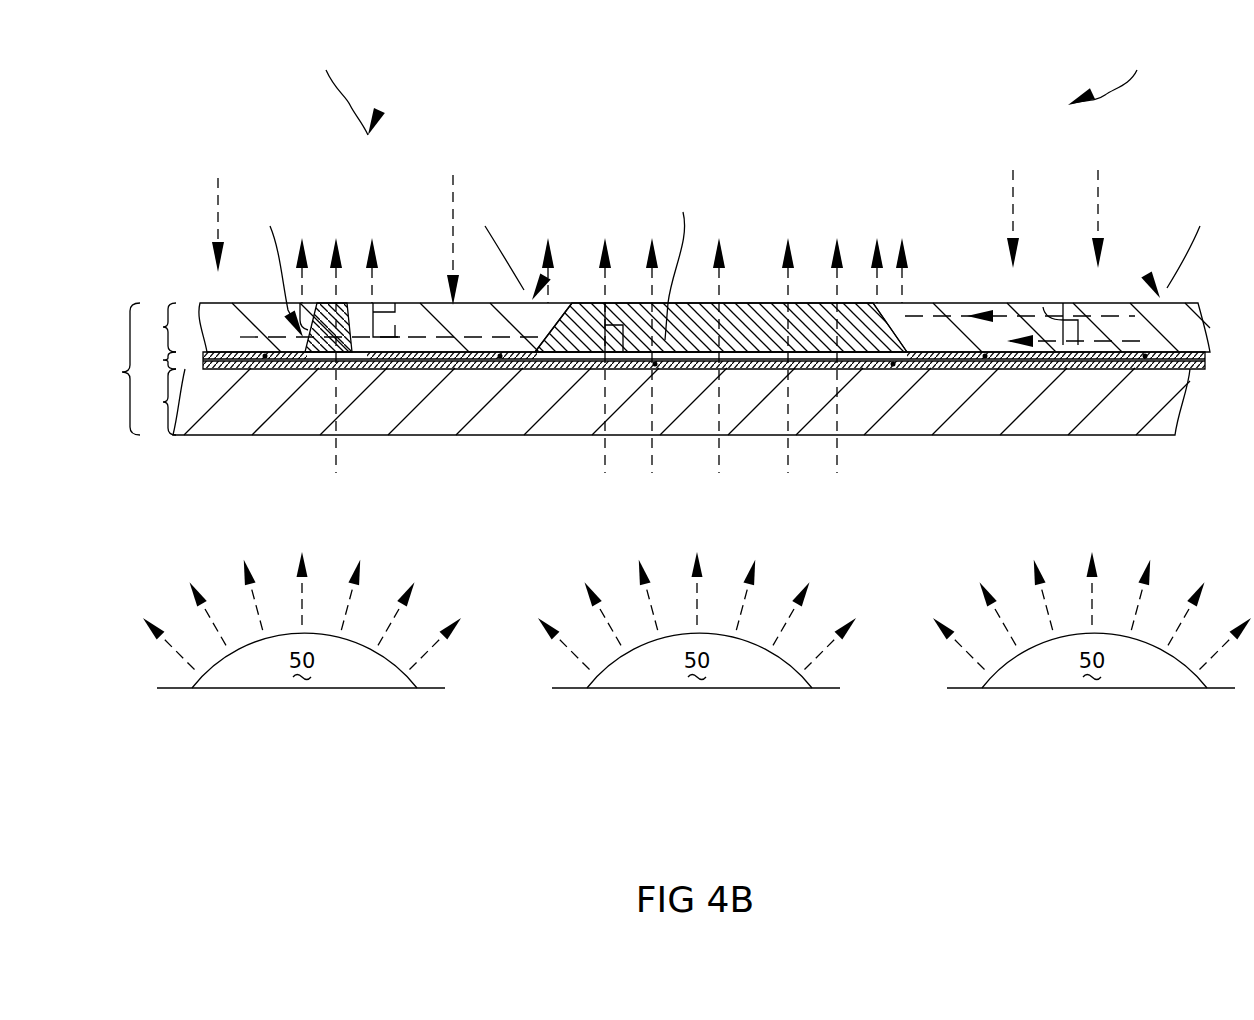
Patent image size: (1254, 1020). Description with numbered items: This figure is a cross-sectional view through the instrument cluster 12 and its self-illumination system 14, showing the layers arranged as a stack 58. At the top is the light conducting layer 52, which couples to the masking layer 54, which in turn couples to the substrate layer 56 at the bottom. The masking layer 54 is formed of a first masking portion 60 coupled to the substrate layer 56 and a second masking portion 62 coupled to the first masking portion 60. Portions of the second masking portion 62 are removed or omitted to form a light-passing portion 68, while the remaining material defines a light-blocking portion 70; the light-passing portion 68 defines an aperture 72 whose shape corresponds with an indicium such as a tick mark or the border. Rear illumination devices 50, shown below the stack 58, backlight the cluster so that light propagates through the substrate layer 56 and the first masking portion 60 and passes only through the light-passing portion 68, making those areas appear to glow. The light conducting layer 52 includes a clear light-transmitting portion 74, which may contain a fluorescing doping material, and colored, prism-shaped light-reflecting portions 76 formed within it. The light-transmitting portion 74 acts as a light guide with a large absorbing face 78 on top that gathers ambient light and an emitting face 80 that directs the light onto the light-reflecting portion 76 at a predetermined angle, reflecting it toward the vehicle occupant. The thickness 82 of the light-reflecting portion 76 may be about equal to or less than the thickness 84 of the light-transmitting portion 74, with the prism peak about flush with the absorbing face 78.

The instrument cluster 12 is at (335, 174).
The self-illumination system 14 is at (1082, 157).
The rear illumination device 50 is at (696, 620).
The light conducting layer 52 is at (672, 327).
The masking layer 54 is at (670, 363).
The substrate layer 56 is at (662, 401).
The stack 58 is at (114, 369).
The first masking portion 60 is at (655, 365).
The second masking portion 62 is at (500, 358).
The light-passing portion 68 is at (265, 358).
The light-blocking portion 70 is at (335, 330).
The aperture 72 is at (340, 303).
The light-transmitting portion 74 is at (426, 336).
The light-reflecting portion 76 is at (474, 263).
The absorbing face 78 is at (842, 252).
The emitting face 80 is at (560, 355).
The thickness of the light-reflecting portion 82 is at (300, 303).
The thickness of the light-transmitting portion 84 is at (373, 303).